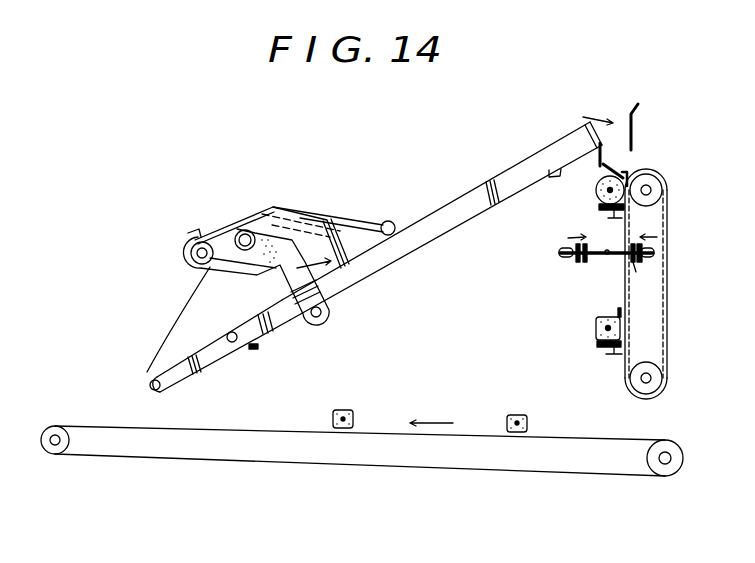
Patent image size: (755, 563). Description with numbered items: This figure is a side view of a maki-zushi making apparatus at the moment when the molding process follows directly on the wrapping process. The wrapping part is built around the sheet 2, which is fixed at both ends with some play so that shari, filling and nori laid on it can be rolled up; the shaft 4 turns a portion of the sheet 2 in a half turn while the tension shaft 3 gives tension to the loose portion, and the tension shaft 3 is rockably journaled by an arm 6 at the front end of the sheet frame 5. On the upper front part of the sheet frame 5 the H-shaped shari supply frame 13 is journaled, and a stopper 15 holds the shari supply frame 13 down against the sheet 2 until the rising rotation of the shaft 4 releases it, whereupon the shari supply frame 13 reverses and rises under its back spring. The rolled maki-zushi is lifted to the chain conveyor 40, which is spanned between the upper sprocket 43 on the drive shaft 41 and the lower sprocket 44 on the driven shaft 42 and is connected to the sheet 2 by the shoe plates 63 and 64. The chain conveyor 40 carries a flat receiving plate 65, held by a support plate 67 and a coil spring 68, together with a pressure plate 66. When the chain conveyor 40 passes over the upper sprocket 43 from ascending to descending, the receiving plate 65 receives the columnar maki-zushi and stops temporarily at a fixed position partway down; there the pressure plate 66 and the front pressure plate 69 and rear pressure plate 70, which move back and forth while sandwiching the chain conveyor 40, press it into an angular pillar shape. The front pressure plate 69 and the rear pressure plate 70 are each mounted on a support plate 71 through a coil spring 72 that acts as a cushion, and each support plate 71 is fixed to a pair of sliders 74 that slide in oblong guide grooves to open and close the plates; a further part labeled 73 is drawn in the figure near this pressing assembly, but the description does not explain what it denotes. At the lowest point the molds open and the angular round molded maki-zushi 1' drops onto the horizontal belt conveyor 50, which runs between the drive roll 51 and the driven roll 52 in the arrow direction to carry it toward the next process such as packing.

The angular round molded maki-zushi 1' is at (429, 402).
The sheet 2 is at (173, 322).
The tension shaft 3 is at (150, 389).
The shaft 4 is at (212, 248).
The sheet frame 5 is at (423, 243).
The arm 6 is at (203, 352).
The shari supply frame 13 is at (348, 218).
The stopper 15 is at (193, 265).
The chain conveyor 40 is at (667, 343).
The drive shaft 41 is at (655, 190).
The driven shaft 42 is at (649, 384).
The sprocket 43 is at (662, 203).
The sprocket 44 is at (661, 384).
The belt conveyor 50 is at (422, 471).
The drive roll 51 is at (667, 477).
The driven roll 52 is at (55, 455).
The shoe plate 63 is at (637, 121).
The shoe plate 64 is at (578, 140).
The receiving plate 65 is at (600, 213).
The pressure plate 66 is at (628, 173).
The support plate 67 is at (598, 205).
The coil spring 68 is at (604, 209).
The front pressure plate 69 is at (610, 257).
The rear pressure plate 70 is at (633, 268).
The support plate 71 is at (655, 253).
The coil spring 72 is at (638, 265).
The hole 73 is at (607, 252).
The slider 74 is at (645, 262).